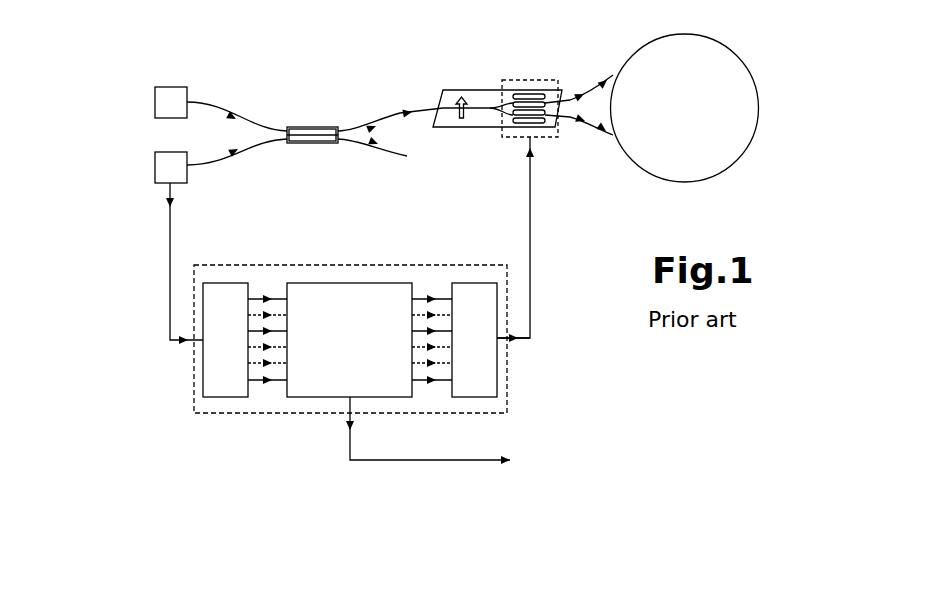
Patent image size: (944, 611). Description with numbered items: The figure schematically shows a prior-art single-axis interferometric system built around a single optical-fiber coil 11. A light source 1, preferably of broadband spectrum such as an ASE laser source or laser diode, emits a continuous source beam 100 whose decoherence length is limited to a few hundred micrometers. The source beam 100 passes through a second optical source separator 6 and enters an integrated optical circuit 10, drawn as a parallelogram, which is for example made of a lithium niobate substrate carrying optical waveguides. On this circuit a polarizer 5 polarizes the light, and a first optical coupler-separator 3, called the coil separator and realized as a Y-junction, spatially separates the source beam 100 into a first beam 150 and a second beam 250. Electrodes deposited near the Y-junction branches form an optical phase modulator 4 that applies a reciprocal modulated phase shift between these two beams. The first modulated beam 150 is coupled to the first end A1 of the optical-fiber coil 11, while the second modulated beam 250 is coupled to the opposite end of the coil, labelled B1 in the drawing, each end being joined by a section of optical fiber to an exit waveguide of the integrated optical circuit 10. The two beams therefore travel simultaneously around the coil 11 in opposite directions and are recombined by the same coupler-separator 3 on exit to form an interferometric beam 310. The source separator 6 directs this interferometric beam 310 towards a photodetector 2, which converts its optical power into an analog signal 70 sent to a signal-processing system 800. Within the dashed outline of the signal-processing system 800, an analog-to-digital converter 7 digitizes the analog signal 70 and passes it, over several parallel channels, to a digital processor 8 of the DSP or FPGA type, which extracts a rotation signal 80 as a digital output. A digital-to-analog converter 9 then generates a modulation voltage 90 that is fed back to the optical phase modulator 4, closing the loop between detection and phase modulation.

The light source 1 is at (155, 98).
The photodetector 2 is at (155, 163).
The optical coupler-separator 3 is at (490, 112).
The optical phase modulator 4 is at (518, 80).
The polarizer 5 is at (462, 128).
The optical source separator 6 is at (317, 127).
The analog-to-digital converter 7 is at (203, 363).
The digital processor 8 is at (332, 283).
The digital-to-analog converter 9 is at (478, 283).
The integrated optical circuit 10 is at (477, 90).
The optical-fiber coil 11 is at (747, 73).
The analog signal 70 is at (170, 205).
The rotation signal 80 is at (508, 458).
The modulation voltage 90 is at (512, 342).
The source beam 100 is at (232, 117).
The first modulated beam 150 is at (580, 93).
The second modulated beam 250 is at (584, 122).
The interferometric beam 310 is at (372, 127).
The signal-processing system 800 is at (194, 280).
The first end of the optical-fiber coil A1 is at (607, 58).
The second beam B1 is at (609, 158).